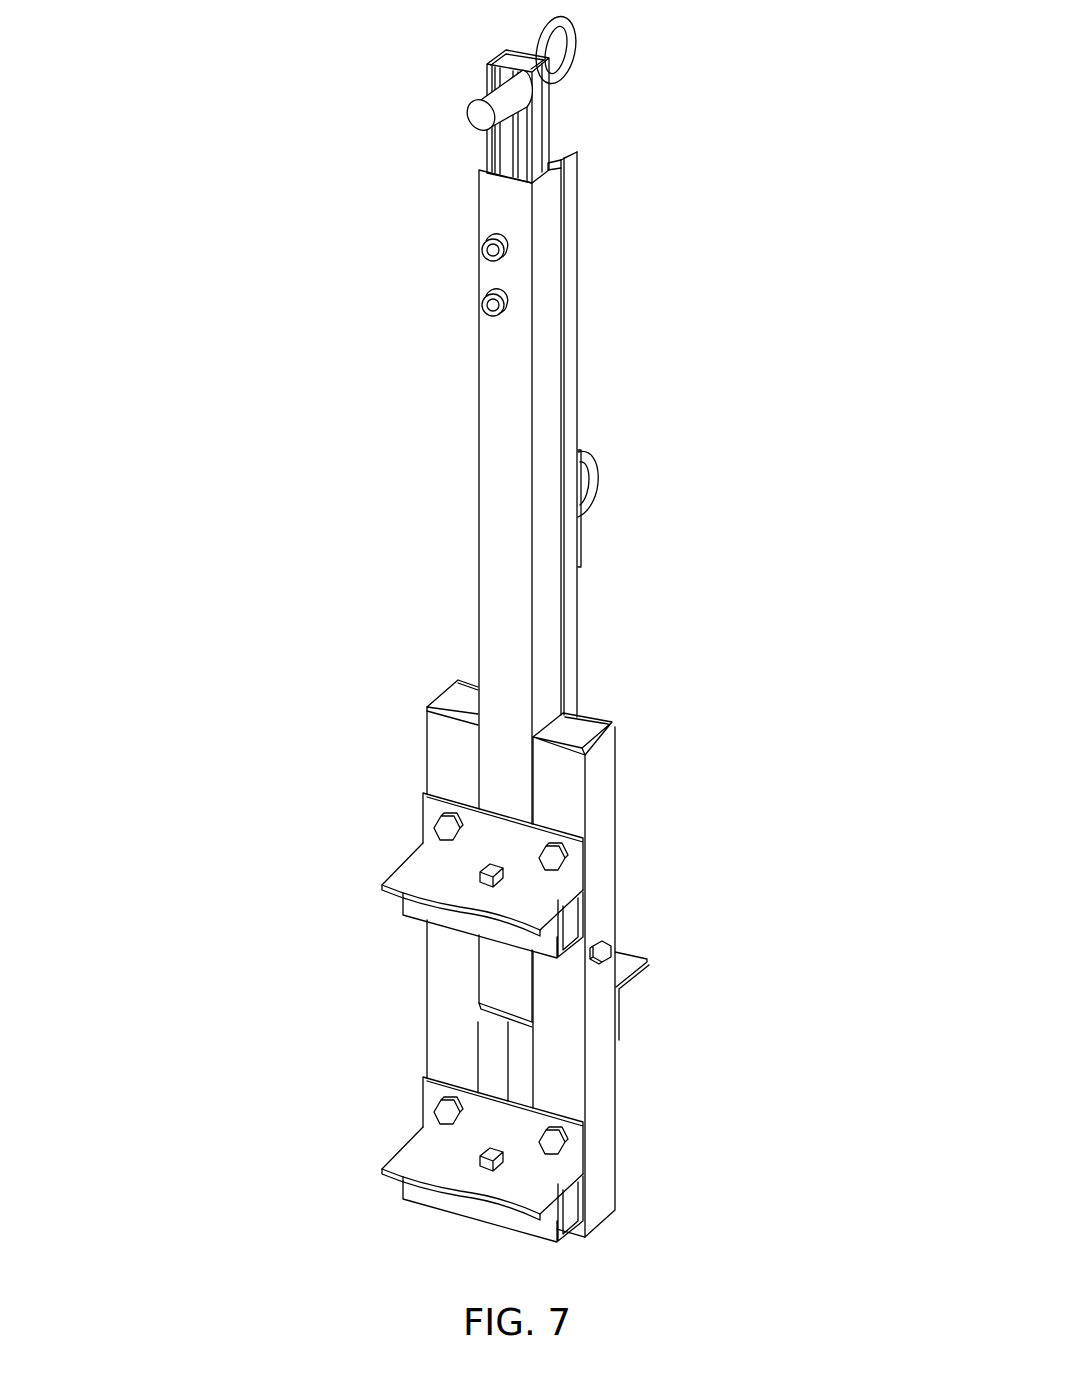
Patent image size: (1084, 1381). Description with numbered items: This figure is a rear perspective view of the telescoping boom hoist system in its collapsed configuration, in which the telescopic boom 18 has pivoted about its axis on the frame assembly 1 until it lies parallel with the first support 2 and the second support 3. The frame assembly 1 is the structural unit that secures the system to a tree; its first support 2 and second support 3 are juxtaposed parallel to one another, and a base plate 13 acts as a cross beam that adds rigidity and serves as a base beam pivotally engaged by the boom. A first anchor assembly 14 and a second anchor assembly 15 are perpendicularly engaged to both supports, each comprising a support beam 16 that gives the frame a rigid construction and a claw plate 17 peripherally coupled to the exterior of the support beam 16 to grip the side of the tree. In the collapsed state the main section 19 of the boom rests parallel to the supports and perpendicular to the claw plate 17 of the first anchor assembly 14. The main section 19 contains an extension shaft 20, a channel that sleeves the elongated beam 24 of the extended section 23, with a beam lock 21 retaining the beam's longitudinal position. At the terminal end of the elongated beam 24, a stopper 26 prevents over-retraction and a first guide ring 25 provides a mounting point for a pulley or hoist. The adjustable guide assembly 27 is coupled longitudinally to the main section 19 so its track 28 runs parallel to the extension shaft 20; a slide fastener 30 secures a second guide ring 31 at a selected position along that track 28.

The frame assembly 1 is at (668, 1024).
The first support 2 is at (435, 702).
The second support 3 is at (614, 727).
The base plate 13 is at (649, 960).
The first anchor assembly 14 is at (388, 830).
The second anchor assembly 15 is at (398, 1117).
The support beam 16 is at (413, 920).
The claw plate 17 is at (387, 878).
The telescopic boom 18 is at (340, 373).
The main section 19 is at (497, 477).
The extension shaft 20 is at (560, 160).
The beam lock 21 is at (488, 253).
The extended section 23 is at (372, 102).
The elongated beam 24 is at (488, 143).
The first guide ring 25 is at (573, 32).
The stopper 26 is at (480, 97).
The adjustable guide assembly 27 is at (602, 308).
The track 28 is at (560, 163).
The slide fastener 30 is at (580, 553).
The second guide ring 31 is at (598, 474).